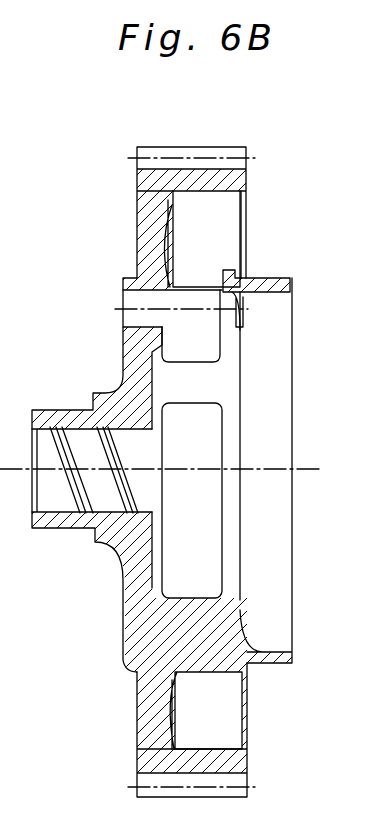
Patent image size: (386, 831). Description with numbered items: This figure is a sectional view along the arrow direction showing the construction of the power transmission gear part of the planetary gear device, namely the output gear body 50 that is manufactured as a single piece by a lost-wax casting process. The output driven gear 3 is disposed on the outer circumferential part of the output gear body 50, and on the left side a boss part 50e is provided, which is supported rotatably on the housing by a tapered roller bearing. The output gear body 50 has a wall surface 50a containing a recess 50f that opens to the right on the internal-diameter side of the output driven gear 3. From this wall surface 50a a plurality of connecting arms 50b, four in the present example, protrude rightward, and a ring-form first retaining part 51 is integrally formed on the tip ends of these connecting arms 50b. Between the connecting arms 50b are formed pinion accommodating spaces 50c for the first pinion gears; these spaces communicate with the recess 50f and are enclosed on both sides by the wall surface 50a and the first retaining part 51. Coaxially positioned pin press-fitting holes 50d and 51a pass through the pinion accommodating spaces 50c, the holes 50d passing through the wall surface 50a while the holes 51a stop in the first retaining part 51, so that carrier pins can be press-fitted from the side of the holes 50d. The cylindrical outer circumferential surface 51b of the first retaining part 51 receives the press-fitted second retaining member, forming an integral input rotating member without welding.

The output driven gear 3 is at (186, 147).
The output gear body 50 is at (250, 147).
The wall surface 50a is at (140, 250).
The connecting arms 50b is at (190, 385).
The pinion accommodating spaces 50c is at (200, 343).
The pin press-fitting holes 50d is at (122, 303).
The left-side boss part 50e is at (53, 527).
The recess 50f is at (223, 231).
The first retaining part 51 is at (263, 650).
The pin press-fitting holes 51a is at (244, 304).
The outer circumferential surface 51b is at (262, 279).